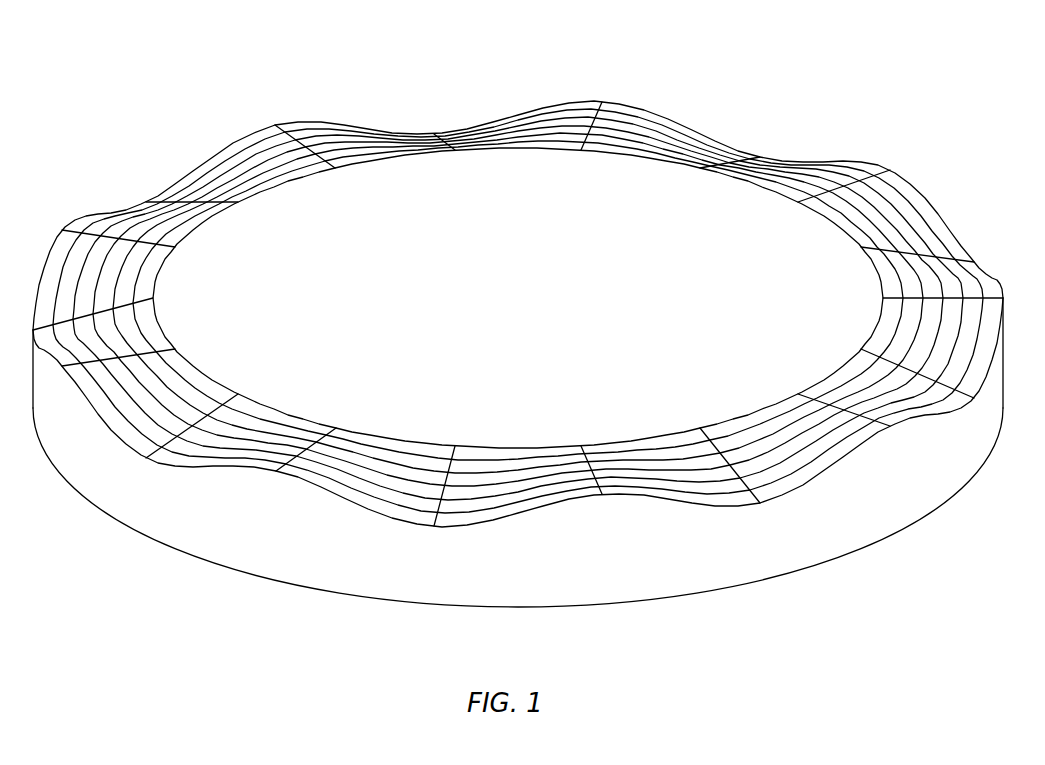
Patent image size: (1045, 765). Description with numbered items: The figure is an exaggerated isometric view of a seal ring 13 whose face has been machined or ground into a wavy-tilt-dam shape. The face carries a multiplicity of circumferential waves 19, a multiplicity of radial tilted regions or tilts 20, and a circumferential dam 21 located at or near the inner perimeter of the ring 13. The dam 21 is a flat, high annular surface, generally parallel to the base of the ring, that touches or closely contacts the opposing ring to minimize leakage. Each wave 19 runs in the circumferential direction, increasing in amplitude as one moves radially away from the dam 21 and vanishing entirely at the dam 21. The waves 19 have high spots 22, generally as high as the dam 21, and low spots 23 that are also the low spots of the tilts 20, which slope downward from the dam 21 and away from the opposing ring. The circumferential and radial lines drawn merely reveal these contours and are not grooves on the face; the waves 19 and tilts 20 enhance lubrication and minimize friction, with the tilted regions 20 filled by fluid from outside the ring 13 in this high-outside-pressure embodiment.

The ring 13 is at (713, 557).
The circumferential waves 19 is at (652, 123).
The radial tilted regions 20 is at (927, 257).
The circumferential dam 21 is at (790, 193).
The high spots 22 is at (870, 178).
The low spots 23 is at (750, 153).